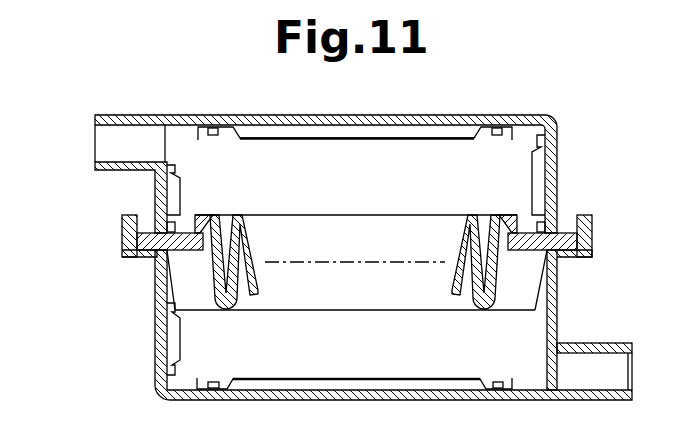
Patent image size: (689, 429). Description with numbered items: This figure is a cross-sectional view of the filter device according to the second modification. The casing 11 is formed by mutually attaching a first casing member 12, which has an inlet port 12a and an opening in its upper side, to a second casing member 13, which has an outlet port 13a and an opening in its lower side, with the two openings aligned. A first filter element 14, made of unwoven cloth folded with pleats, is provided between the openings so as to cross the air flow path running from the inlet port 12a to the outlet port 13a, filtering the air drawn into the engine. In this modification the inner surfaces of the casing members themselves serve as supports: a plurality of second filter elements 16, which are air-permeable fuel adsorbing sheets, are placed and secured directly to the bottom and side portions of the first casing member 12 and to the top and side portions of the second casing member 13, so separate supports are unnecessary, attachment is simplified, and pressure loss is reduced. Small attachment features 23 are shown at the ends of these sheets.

The casing 11 is at (63, 195).
The first casing member 12 is at (155, 272).
The inlet port 12a is at (592, 358).
The second casing member 13 is at (155, 207).
The outlet port 13a is at (142, 130).
The first filter element 14 is at (243, 296).
The second filter element 16 is at (179, 205).
The engaging claw 23 is at (213, 136).